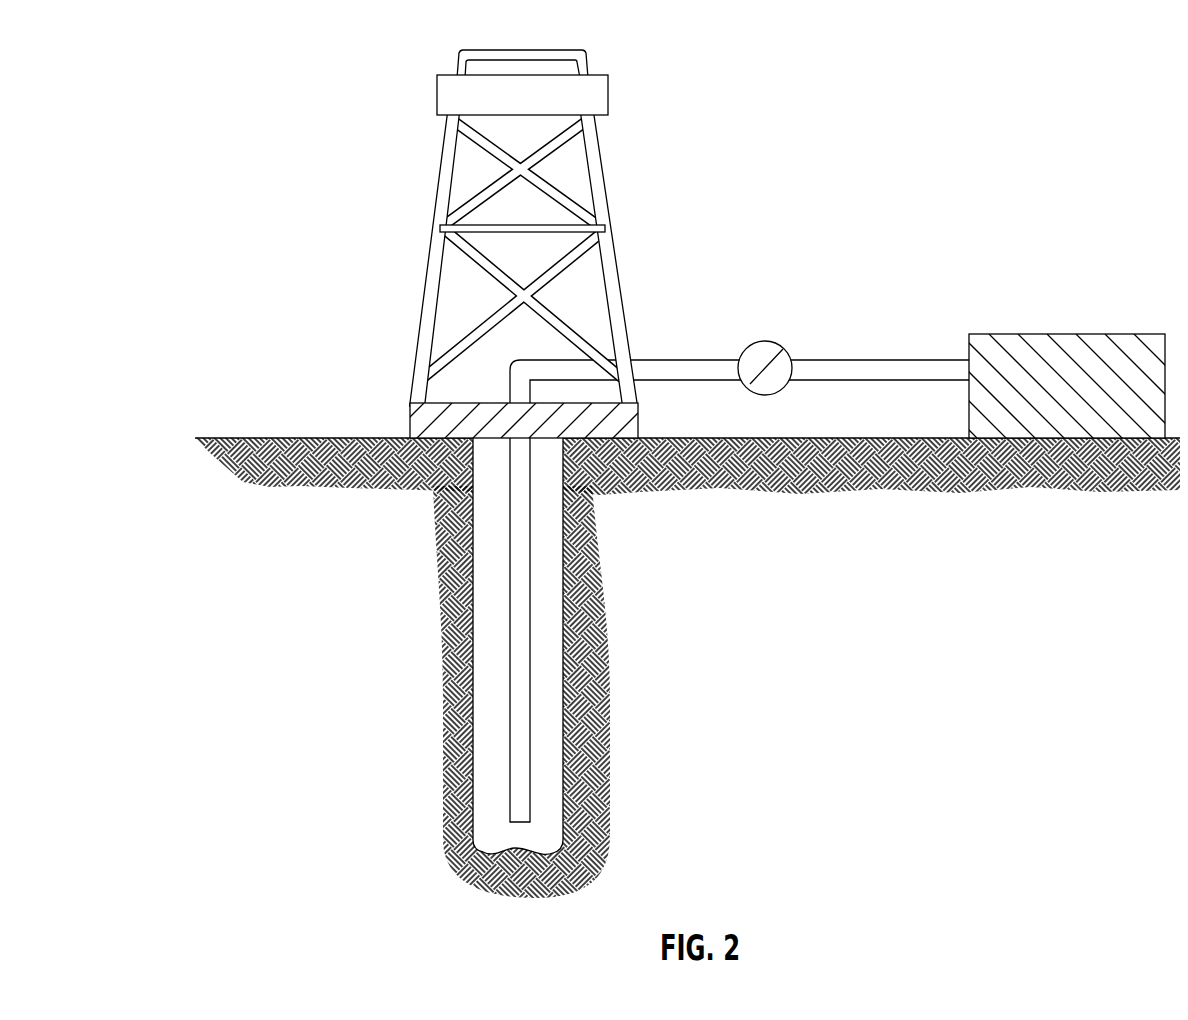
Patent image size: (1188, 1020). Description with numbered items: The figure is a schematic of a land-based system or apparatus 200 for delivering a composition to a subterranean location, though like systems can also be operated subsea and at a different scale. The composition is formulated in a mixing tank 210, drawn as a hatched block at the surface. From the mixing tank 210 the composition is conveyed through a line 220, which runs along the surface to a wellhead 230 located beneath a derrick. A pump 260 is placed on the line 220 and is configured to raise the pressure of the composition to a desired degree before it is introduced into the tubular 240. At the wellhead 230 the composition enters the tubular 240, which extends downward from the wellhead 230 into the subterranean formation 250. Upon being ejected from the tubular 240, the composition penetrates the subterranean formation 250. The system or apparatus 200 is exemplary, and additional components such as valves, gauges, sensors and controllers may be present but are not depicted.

The system or apparatus 200 is at (203, 75).
The mixing tank 210 is at (1068, 334).
The line 220 is at (672, 358).
The wellhead 230 is at (408, 420).
The tubular 240 is at (532, 573).
The subterranean formation 250 is at (337, 628).
The pump 260 is at (763, 341).